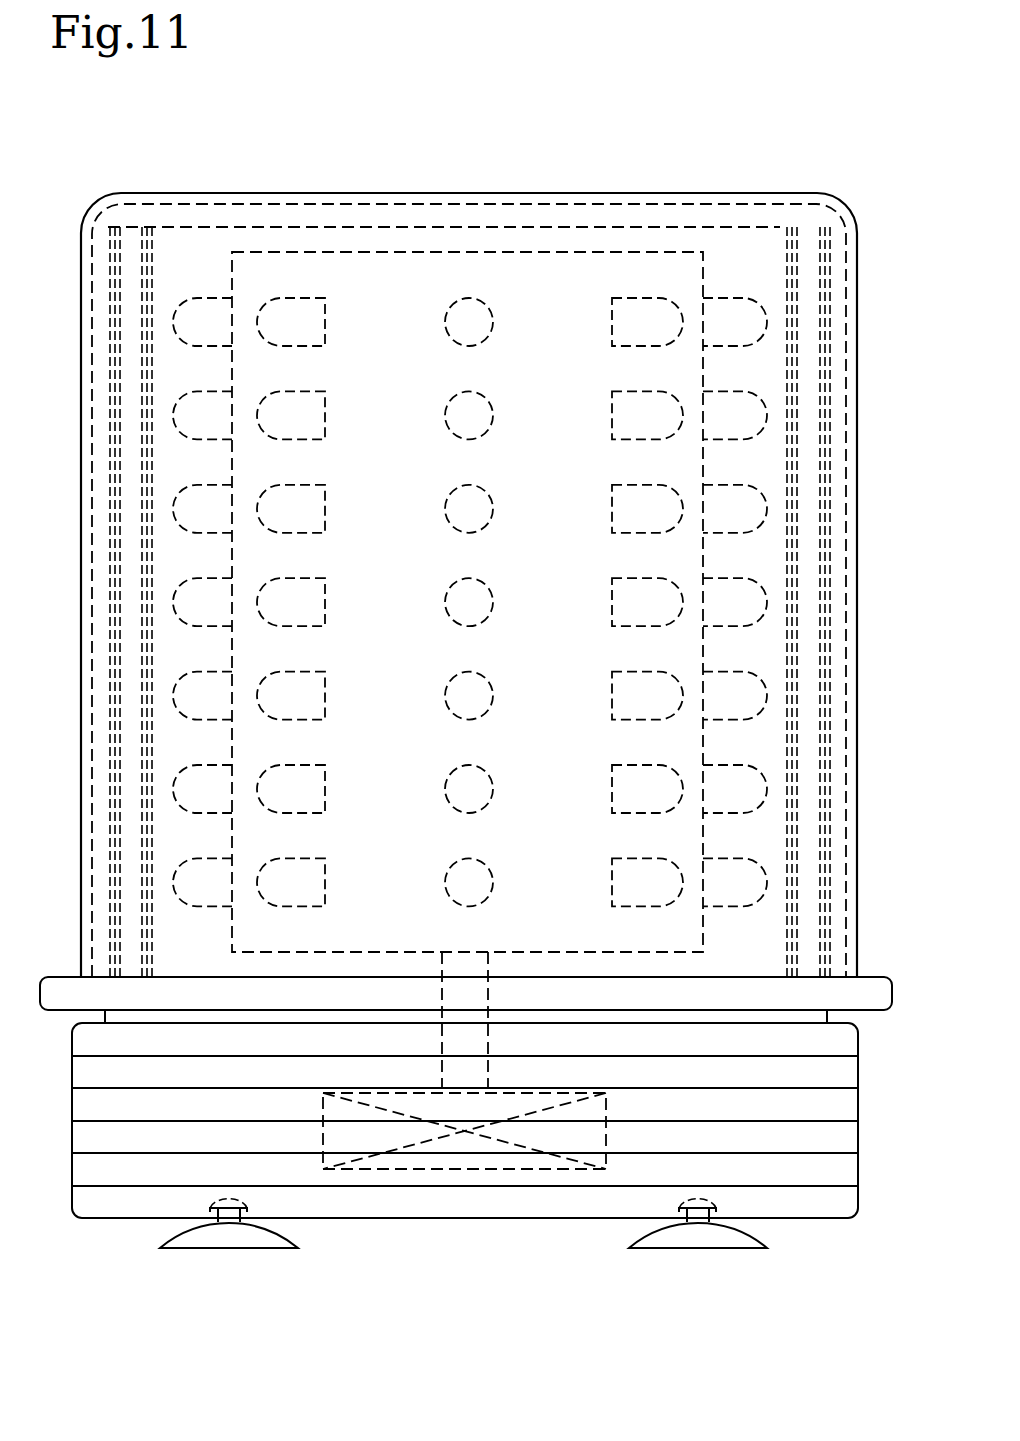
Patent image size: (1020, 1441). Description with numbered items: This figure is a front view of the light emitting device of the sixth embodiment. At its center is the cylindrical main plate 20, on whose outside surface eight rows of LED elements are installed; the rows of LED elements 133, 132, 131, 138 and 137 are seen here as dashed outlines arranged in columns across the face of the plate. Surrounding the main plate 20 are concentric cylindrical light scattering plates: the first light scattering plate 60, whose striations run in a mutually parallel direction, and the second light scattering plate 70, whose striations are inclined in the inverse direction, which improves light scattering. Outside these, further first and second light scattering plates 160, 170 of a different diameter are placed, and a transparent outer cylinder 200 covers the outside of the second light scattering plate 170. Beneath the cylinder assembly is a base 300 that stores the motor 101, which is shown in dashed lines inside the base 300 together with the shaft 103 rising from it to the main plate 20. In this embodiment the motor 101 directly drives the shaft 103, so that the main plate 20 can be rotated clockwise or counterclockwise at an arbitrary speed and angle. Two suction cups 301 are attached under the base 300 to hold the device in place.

The transparent outer cylinder 200 is at (420, 193).
The main plate 20 is at (555, 227).
The second light scattering plate 70 is at (143, 287).
The first light scattering plate 60 is at (152, 272).
The first light scattering plate 160 is at (823, 287).
The second light scattering plate 170 is at (832, 270).
The LED elements 133 is at (192, 298).
The LED elements 132 is at (302, 297).
The LED elements 131 is at (471, 298).
The LED elements 138 is at (660, 298).
The LED elements 137 is at (743, 298).
The shaft 103 is at (442, 1045).
The motor 101 is at (473, 1170).
The base 300 is at (122, 1220).
The suction cups 301 is at (225, 1250).